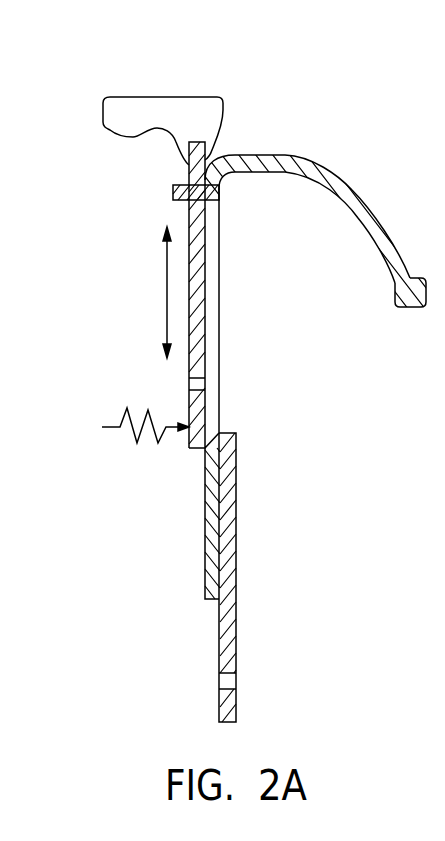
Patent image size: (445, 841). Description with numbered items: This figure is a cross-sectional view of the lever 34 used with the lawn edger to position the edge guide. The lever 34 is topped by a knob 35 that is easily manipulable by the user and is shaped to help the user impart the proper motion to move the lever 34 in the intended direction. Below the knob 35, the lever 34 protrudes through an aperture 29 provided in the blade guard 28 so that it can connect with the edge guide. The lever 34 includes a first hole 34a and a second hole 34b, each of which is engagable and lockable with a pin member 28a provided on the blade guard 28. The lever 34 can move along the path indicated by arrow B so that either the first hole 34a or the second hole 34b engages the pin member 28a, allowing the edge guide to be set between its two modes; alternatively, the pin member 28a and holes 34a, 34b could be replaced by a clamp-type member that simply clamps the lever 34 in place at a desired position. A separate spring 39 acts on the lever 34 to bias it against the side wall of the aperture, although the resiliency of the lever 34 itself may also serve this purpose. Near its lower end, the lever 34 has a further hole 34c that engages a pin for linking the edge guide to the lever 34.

The blade guard 28 is at (363, 199).
The pin member 28a is at (175, 193).
The aperture 29 is at (235, 333).
The lever 34 is at (237, 605).
The first hole 34a is at (189, 220).
The second hole 34b is at (189, 387).
The hole 34c is at (228, 683).
The knob 35 is at (170, 97).
The spring 39 is at (137, 437).
The arrow B is at (167, 283).